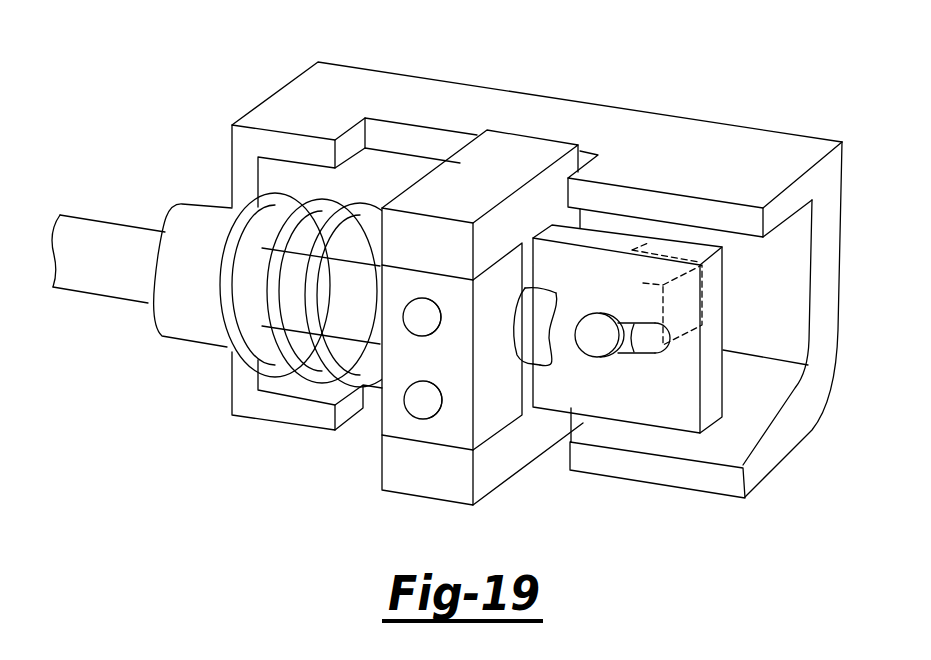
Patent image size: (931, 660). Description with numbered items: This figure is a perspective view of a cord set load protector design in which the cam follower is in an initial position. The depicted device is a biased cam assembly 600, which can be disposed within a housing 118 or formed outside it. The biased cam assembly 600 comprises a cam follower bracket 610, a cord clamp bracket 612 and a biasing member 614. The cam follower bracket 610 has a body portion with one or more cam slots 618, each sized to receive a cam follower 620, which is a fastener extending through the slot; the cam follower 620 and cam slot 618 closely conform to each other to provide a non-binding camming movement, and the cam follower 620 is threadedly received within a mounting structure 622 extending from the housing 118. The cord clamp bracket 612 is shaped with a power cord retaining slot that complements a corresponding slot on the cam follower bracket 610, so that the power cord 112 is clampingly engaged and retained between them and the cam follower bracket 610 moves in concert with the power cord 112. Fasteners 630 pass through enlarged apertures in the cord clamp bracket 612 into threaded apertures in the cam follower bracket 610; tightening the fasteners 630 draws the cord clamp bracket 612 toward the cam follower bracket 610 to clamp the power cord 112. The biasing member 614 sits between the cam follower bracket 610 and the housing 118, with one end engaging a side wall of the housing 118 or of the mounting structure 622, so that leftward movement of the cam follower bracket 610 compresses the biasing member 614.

The biased cam assembly 600 is at (170, 52).
The housing 118 is at (727, 138).
The power cord 112 is at (96, 226).
The biasing member 614 is at (283, 313).
The cam follower bracket 610 is at (548, 482).
The cord clamp bracket 612 is at (382, 426).
The fasteners 630 is at (420, 412).
The cam follower 620 is at (588, 348).
The cam slot 618 is at (633, 325).
The mounting structure 622 is at (713, 308).